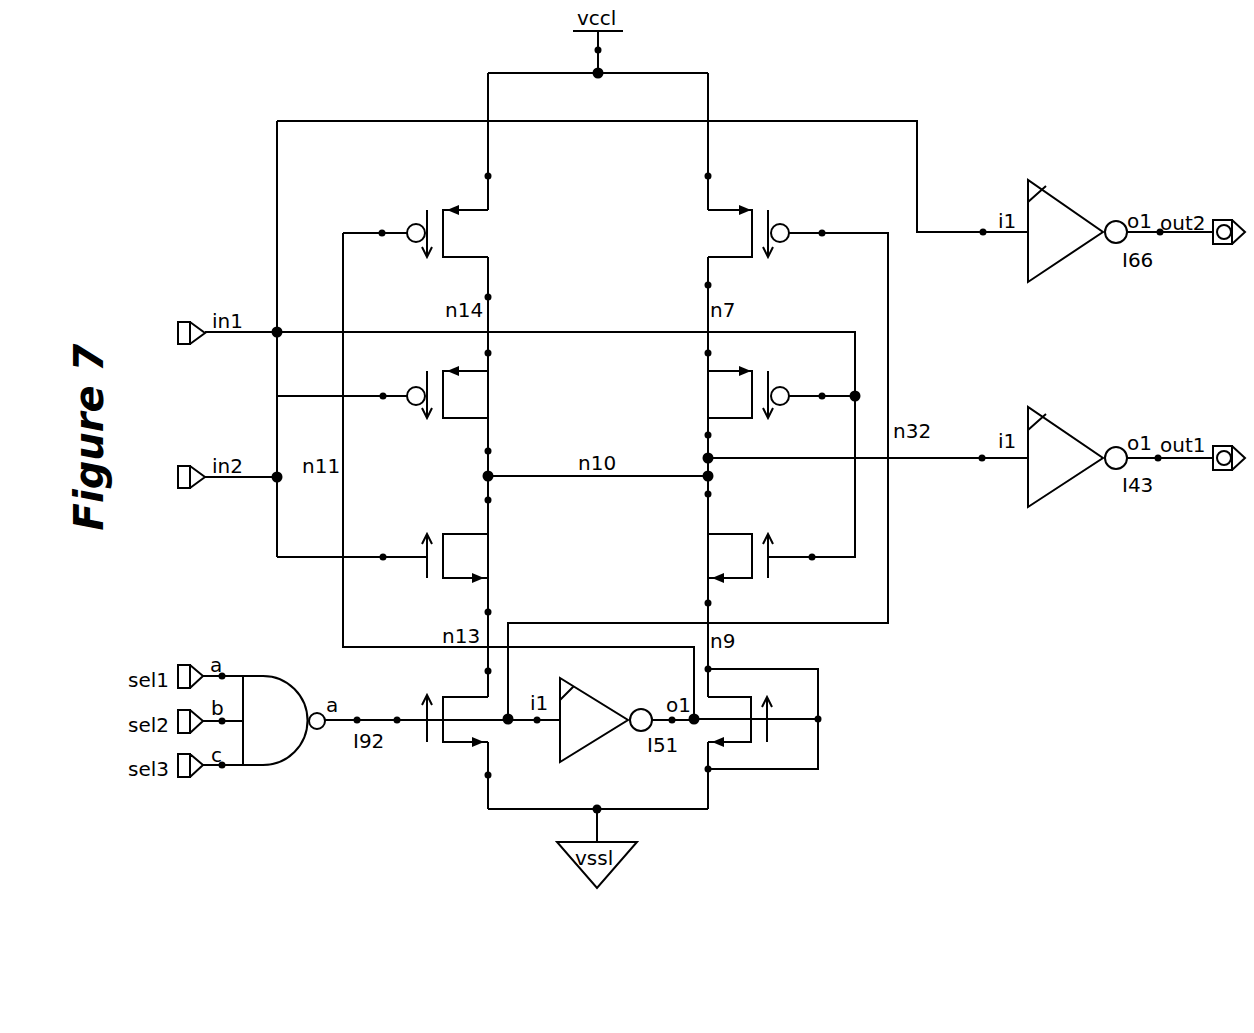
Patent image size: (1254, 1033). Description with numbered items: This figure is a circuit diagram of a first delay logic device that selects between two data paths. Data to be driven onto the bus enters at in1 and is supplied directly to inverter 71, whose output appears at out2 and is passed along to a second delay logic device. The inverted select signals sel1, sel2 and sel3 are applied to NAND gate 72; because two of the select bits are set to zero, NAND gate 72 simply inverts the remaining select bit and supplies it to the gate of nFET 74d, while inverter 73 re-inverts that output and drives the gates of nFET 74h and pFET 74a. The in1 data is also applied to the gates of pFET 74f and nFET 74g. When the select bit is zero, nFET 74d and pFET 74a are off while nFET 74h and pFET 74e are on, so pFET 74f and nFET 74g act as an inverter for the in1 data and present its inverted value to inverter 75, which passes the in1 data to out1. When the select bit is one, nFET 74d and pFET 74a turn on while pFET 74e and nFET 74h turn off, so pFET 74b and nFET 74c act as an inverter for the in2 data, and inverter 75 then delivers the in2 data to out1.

The inverter 71 is at (1052, 268).
The NAND gate 72 is at (252, 767).
The inverter 73 is at (613, 707).
The pFET 74a is at (473, 227).
The pFET 74b is at (473, 392).
The nFET 74c is at (475, 552).
The nFET 74d is at (473, 728).
The pFET 74e is at (725, 230).
The pFET 74f is at (727, 390).
The nFET 74g is at (727, 553).
The nFET 74h is at (708, 728).
The inverter 75 is at (1052, 495).